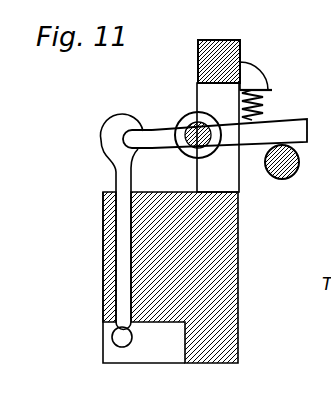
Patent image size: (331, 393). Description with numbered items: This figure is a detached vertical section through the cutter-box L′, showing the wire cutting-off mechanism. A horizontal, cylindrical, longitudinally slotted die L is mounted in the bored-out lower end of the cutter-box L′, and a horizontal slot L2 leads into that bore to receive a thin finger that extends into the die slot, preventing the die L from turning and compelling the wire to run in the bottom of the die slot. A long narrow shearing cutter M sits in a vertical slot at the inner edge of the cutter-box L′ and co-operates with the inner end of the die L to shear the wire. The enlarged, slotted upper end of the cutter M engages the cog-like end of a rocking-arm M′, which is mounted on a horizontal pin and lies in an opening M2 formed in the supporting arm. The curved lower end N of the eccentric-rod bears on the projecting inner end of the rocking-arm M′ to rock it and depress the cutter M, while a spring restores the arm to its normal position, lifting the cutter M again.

The die L is at (112, 337).
The cutter-box L′ is at (104, 233).
The horizontal slot L2 is at (132, 337).
The shearing cutter M is at (117, 178).
The rocking-arm M′ is at (152, 147).
The opening M2 is at (198, 88).
The curved lower end of the eccentric-rod N is at (299, 162).